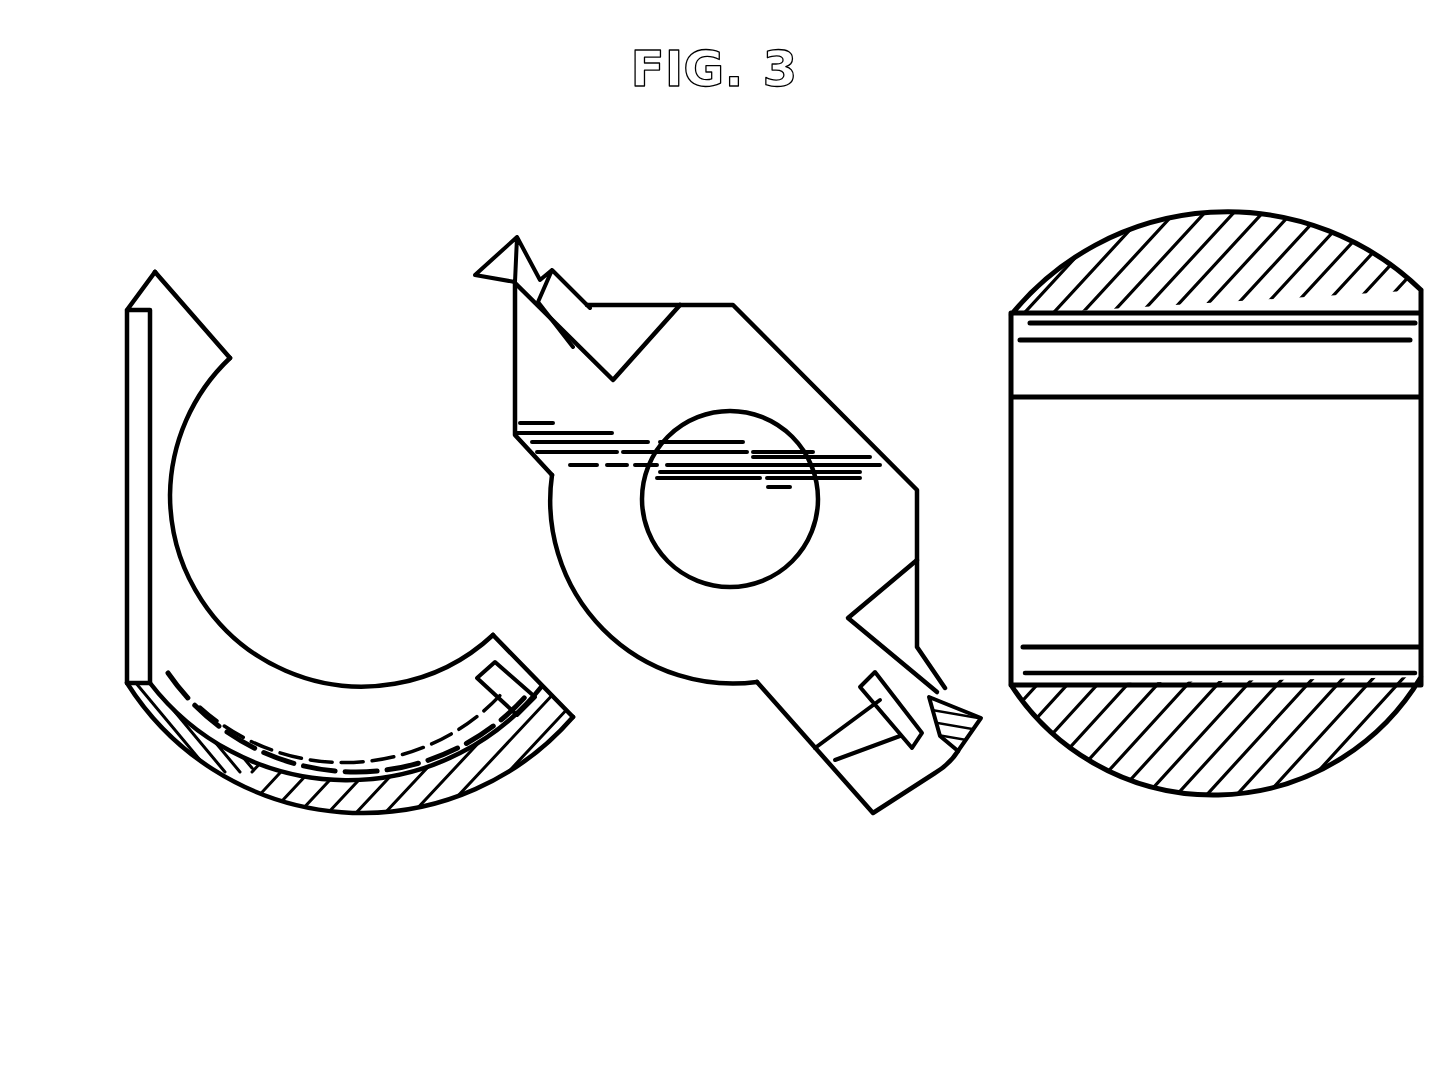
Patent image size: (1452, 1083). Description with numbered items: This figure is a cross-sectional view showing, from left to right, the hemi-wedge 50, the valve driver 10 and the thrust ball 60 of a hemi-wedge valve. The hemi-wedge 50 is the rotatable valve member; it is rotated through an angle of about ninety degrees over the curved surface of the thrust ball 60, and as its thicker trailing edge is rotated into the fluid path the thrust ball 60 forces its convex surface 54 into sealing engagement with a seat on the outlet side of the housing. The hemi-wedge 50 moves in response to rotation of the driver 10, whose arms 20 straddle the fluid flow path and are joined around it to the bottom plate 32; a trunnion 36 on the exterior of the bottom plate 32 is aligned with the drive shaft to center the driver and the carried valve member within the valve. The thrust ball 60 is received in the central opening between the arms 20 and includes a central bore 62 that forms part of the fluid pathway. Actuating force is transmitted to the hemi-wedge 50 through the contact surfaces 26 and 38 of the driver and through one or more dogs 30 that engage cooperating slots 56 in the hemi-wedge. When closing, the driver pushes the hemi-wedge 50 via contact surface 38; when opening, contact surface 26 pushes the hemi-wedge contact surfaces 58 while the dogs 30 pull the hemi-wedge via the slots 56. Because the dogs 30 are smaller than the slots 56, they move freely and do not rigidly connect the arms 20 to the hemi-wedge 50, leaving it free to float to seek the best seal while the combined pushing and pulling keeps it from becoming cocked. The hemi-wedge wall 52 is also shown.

The valve driver 10 is at (810, 288).
The arms 20 is at (497, 263).
The contact surface 26 is at (572, 350).
The dog 30 is at (877, 700).
The bottom plate 32 is at (813, 440).
The trunnion 36 is at (668, 558).
The contact surface 38 is at (868, 642).
The hemi-wedge 50 is at (208, 638).
The side wall 52 is at (133, 350).
The convex surface 54 is at (207, 760).
The slot 56 is at (490, 672).
The contact surface 58 is at (200, 327).
The thrust ball 60 is at (1125, 708).
The central bore 62 is at (1310, 687).